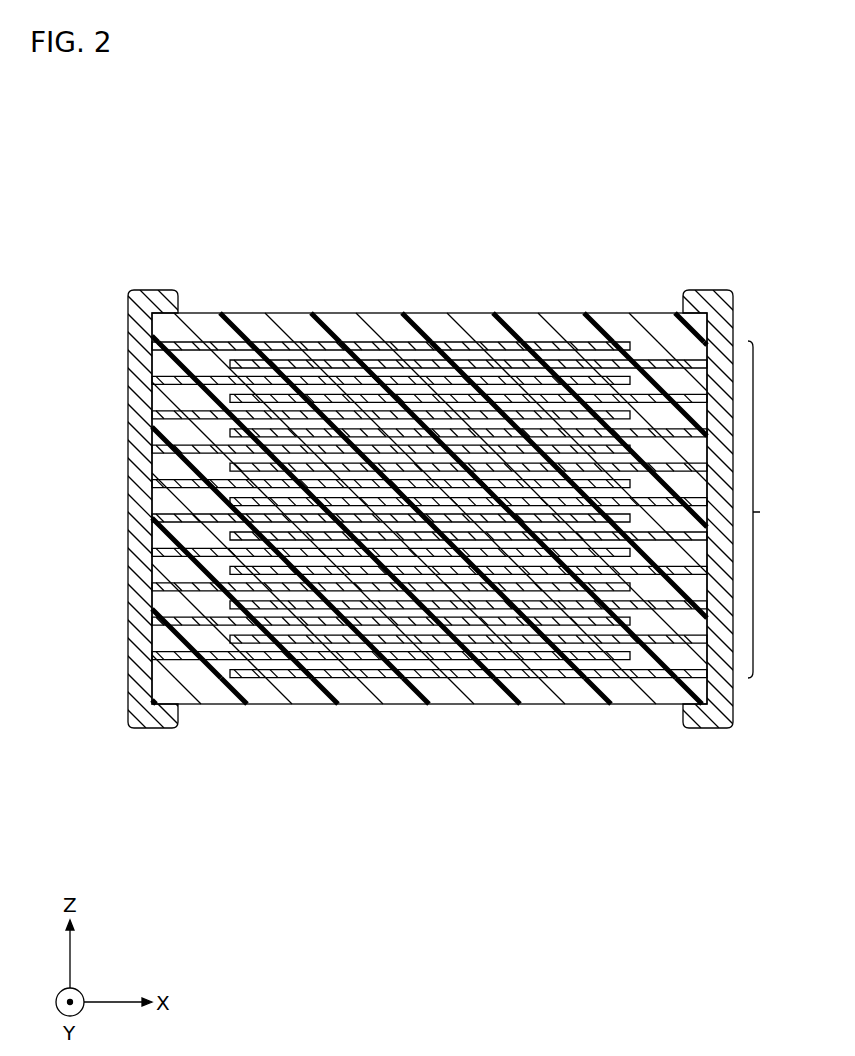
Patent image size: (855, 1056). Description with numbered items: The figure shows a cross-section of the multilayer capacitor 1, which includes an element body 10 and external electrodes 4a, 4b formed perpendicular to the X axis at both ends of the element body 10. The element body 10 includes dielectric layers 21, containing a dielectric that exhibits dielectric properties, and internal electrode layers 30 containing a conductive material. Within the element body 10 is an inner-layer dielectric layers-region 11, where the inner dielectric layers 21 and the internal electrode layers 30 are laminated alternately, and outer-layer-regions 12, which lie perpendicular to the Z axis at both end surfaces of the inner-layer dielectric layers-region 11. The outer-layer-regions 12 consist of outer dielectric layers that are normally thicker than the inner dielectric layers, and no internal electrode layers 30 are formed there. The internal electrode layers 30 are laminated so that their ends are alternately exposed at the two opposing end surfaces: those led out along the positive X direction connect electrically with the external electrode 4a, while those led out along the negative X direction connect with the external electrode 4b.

The multilayer capacitor 1 is at (427, 524).
The element body 10 is at (476, 518).
The inner-layer dielectric layers-region 11 is at (774, 509).
The outer-layer-regions 12 is at (290, 342).
The dielectric layers 21 is at (340, 342).
The internal electrode layers 30 is at (525, 342).
The external electrode 4a is at (700, 300).
The external electrode 4b is at (128, 580).